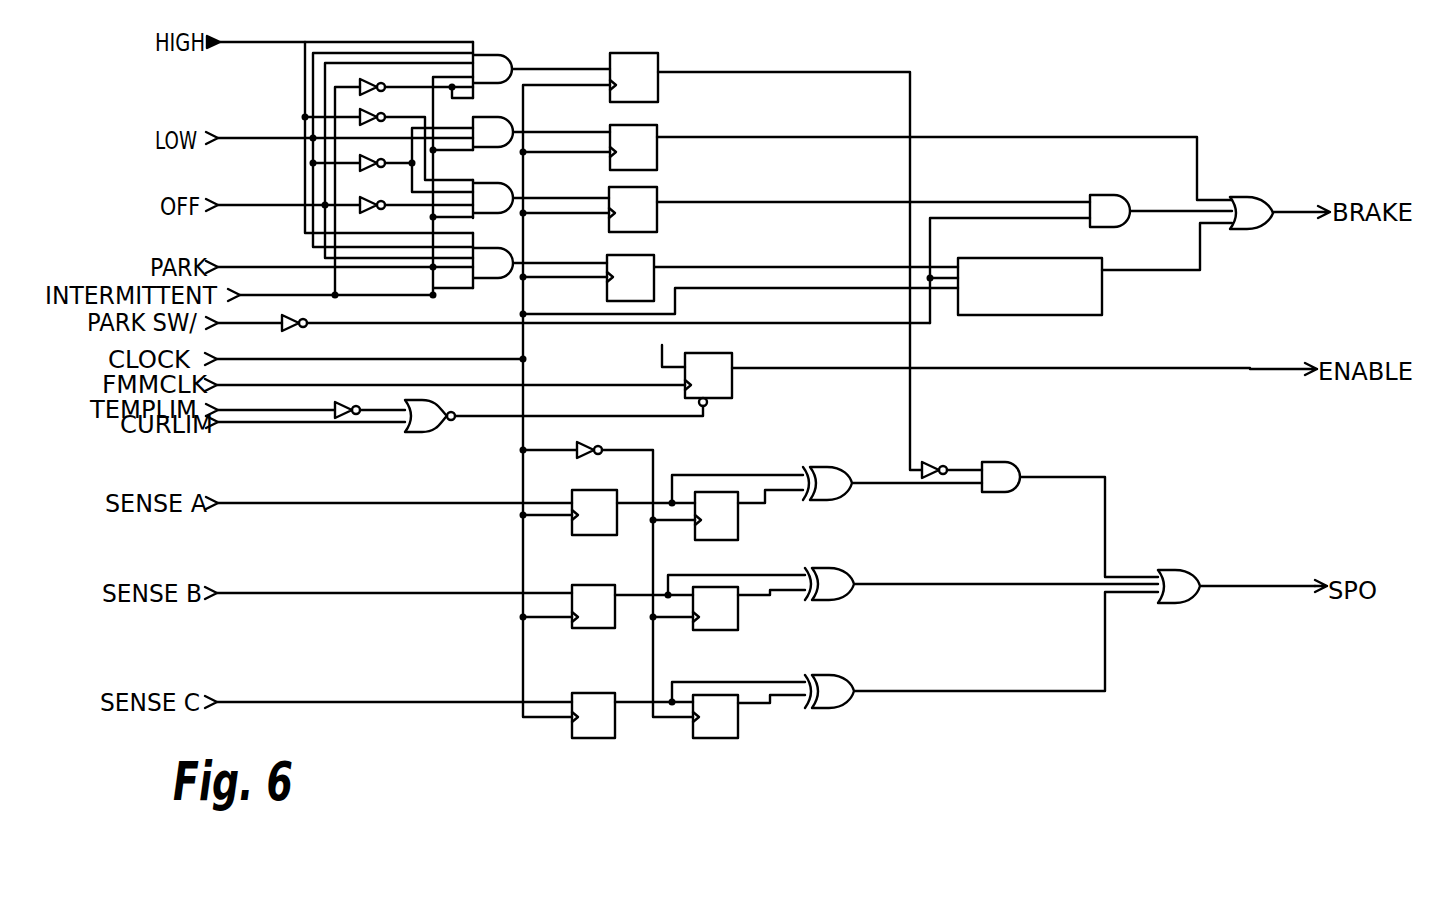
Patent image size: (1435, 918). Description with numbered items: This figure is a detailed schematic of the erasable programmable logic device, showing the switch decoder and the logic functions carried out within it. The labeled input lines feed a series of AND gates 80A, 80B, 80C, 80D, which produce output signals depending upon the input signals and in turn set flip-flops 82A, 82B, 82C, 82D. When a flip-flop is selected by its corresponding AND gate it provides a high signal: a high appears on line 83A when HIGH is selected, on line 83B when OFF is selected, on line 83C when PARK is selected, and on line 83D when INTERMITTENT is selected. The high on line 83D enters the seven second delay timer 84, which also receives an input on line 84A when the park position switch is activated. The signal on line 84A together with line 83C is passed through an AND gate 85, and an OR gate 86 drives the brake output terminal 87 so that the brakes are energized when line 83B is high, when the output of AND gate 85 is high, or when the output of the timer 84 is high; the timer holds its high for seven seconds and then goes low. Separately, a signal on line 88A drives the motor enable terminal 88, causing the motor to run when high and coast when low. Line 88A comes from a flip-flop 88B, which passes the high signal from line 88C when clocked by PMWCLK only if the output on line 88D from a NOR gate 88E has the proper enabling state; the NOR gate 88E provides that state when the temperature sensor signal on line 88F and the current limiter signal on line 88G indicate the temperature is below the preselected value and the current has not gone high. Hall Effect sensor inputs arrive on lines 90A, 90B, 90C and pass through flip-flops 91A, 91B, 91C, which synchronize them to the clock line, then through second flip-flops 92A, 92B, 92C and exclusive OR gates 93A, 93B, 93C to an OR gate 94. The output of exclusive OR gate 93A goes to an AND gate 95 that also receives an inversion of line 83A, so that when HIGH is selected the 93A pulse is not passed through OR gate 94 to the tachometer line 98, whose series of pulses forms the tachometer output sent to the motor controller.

The AND gate 80A is at (497, 63).
The AND gate 80B is at (488, 130).
The AND gate 80C is at (488, 193).
The AND gate 80D is at (488, 257).
The flip-flop 82A is at (659, 52).
The flip-flop 82B is at (658, 124).
The flip-flop 82C is at (658, 186).
The flip-flop 82D is at (655, 257).
The line 83A is at (833, 72).
The line 83B is at (822, 137).
The line 83C is at (822, 202).
The line 83D is at (783, 266).
The seven second delay timer 84 is at (1013, 258).
The line 84A is at (784, 316).
The AND gate 85 is at (1123, 195).
The OR gate 86 is at (1251, 198).
The brake output terminal 87 is at (1324, 210).
The motor enable terminal 88 is at (1311, 368).
The line 88A is at (1004, 361).
The flip-flop 88B is at (730, 384).
The line 88C is at (672, 364).
The line 88D is at (457, 420).
The NOR gate 88E is at (432, 404).
The line 88F is at (271, 408).
The line 88G is at (259, 430).
The line 90A is at (368, 502).
The line 90B is at (376, 591).
The line 90C is at (347, 701).
The flip-flop 91A is at (605, 530).
The flip-flop 91B is at (590, 628).
The flip-flop 91C is at (588, 734).
The second flip-flop 92A is at (740, 527).
The second flip-flop 92B is at (738, 629).
The second flip-flop 92C is at (739, 738).
The exclusive OR gate 93A is at (833, 467).
The exclusive OR gate 93B is at (851, 567).
The exclusive OR gate 93C is at (841, 673).
The OR gate 94 is at (1186, 570).
The AND gate 95 is at (1012, 461).
The tachometer line 98 is at (1300, 585).